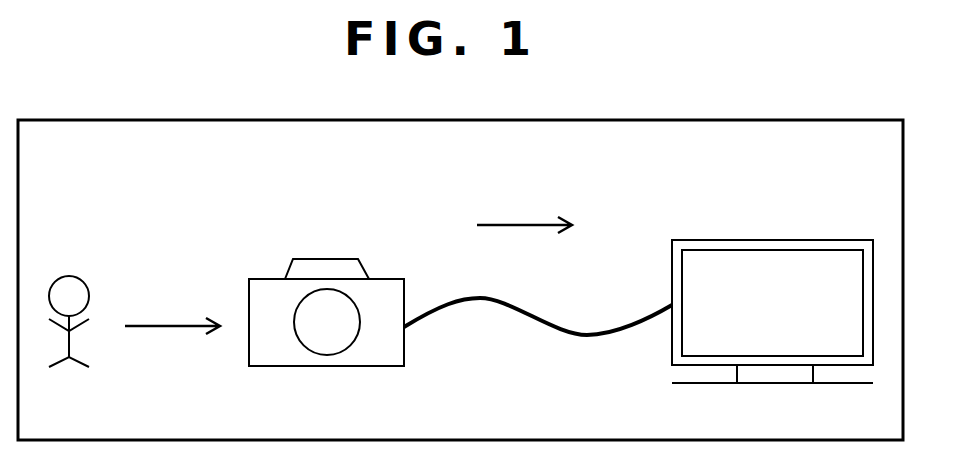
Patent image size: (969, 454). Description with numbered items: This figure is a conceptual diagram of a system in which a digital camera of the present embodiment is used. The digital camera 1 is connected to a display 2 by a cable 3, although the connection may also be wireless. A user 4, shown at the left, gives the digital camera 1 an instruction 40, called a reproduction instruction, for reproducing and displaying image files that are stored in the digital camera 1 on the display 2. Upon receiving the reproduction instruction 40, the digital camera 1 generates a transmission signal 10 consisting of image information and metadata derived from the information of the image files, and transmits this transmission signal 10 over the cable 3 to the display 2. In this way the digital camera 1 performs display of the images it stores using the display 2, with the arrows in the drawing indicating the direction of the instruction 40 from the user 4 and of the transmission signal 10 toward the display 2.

The digital camera 1 is at (337, 259).
The display 2 is at (738, 240).
The cable 3 is at (507, 303).
The user 4 is at (74, 276).
The transmission signal 10 is at (507, 225).
The instruction 40 is at (145, 326).